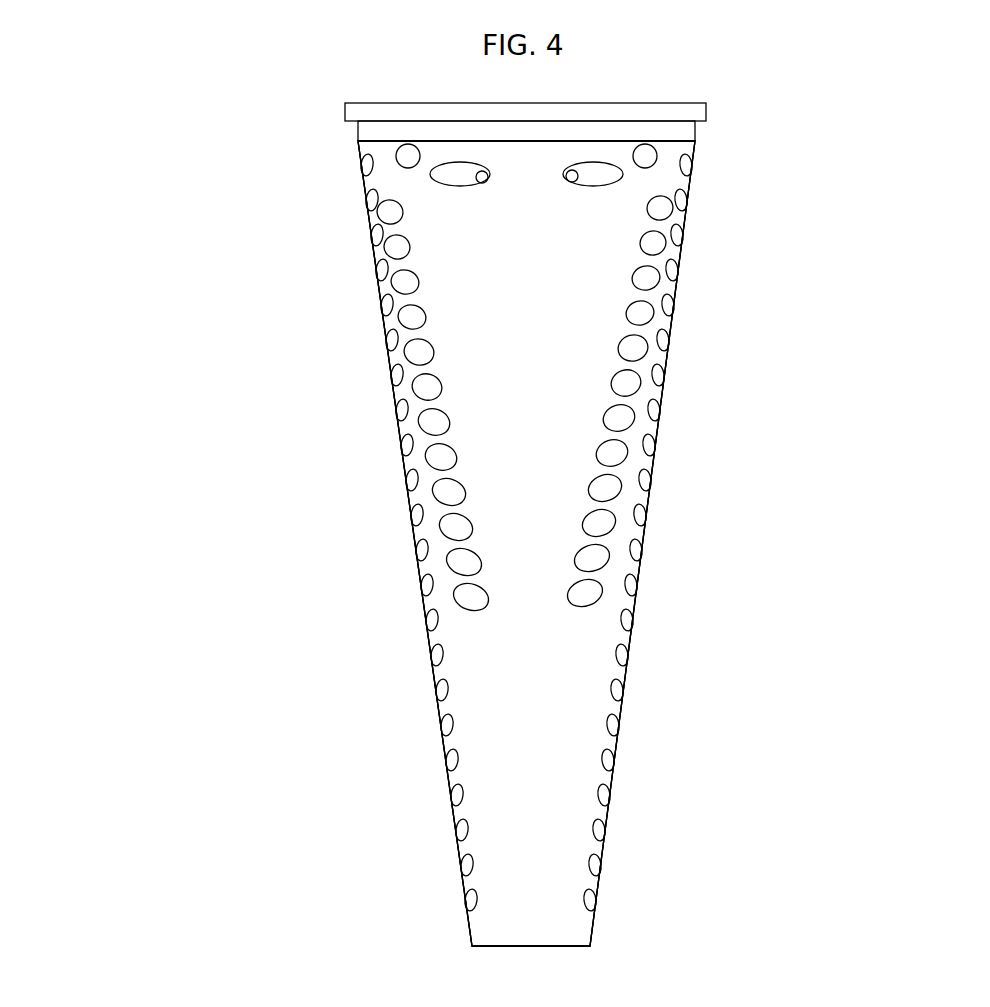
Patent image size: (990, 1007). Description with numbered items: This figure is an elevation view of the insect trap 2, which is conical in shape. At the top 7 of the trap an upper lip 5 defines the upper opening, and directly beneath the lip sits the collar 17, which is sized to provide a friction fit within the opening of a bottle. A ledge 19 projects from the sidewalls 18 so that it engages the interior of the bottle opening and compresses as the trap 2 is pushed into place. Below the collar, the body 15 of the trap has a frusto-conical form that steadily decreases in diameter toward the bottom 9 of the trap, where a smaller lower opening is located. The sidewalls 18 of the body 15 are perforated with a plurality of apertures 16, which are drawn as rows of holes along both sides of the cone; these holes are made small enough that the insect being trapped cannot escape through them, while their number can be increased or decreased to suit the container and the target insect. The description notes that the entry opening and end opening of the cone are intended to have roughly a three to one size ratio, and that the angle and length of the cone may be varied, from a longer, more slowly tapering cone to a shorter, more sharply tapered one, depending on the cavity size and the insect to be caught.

The insect trap 2 is at (108, 177).
The upper lip 5 is at (670, 113).
The collar 17 is at (670, 132).
The ledge 19 is at (360, 147).
The top 7 is at (410, 183).
The apertures 16 is at (660, 205).
The sidewalls 18 is at (510, 372).
The body 15 is at (530, 463).
The bottom 9 is at (560, 935).